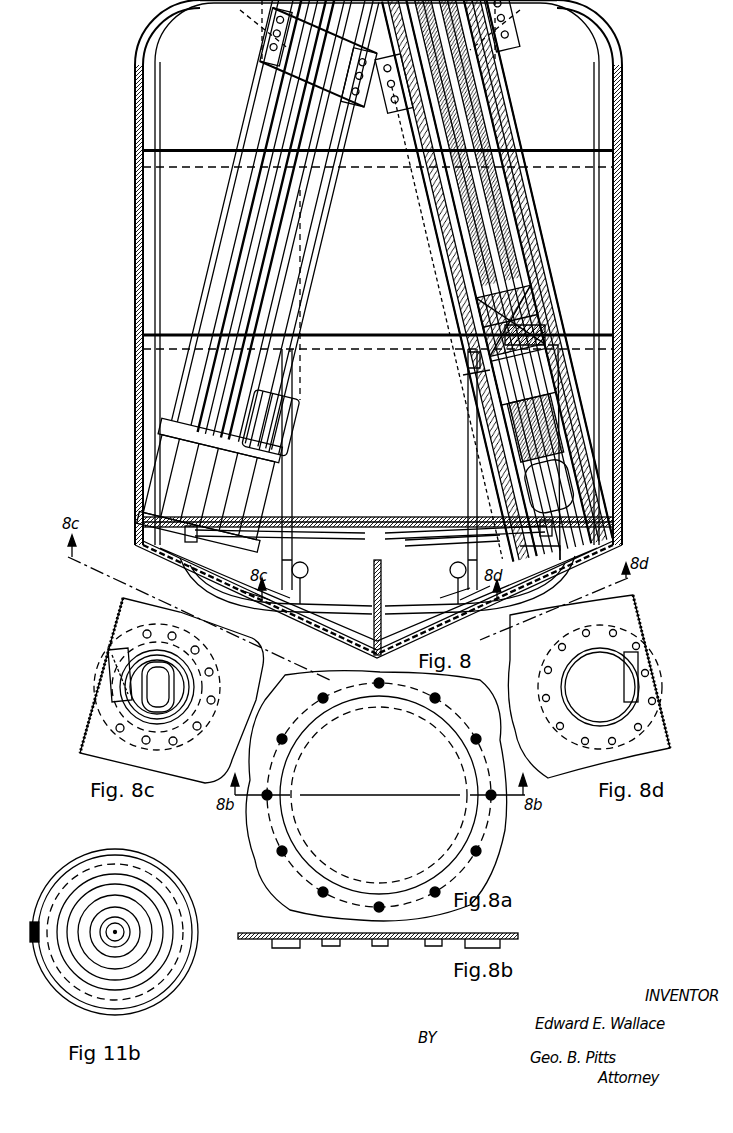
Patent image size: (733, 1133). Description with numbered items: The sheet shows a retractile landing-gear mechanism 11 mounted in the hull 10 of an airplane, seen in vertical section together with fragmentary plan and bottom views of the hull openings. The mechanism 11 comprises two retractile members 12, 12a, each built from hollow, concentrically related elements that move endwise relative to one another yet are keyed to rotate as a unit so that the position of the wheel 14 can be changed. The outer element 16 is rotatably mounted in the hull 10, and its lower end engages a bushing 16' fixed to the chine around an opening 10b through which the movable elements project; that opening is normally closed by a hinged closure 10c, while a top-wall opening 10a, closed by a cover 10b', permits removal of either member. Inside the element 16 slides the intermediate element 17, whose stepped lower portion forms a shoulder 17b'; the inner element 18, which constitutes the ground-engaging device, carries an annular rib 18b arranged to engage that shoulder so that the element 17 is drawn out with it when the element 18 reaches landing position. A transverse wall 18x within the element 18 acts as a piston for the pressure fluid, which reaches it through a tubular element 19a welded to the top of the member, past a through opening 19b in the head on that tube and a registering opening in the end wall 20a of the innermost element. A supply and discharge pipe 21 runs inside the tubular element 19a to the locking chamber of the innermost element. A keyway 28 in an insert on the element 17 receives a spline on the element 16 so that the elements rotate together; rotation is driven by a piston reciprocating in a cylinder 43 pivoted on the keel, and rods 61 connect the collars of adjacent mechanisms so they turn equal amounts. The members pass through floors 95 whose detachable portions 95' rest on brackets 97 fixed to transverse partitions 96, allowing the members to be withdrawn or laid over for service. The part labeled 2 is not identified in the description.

In FIG. 8, the frame 2 is at (620, 214).
In FIG. 8, the floors 95 is at (378, 321).
In FIG. 8, the detachable floor portions 95' is at (378, 235).
In FIG. 8, the transverse partitions 96 is at (208, 166).
In FIG. 8, the blocks or brackets 97 is at (318, 191).
In FIG. 8, the outer element 16 is at (286, 277).
In FIG. 11B, the outer element 16 is at (115, 921).
In FIG. 8, the bushing 16' is at (554, 567).
In FIG. 8, the annular rib 18b is at (528, 281).
In FIG. 8, the transverse wall 18x is at (546, 341).
In FIG. 8, the through opening 19b is at (458, 371).
In FIG. 8, the end wall 20a is at (462, 367).
In FIG. 8, the shoulder 17b' is at (577, 452).
In FIG. 8, the retractile member 12 is at (321, 309).
In FIG. 8, the retractile member 12a is at (447, 306).
In FIG. 8, the retractile mechanism 11 is at (396, 495).
In FIG. 8, the rods 61 is at (322, 530).
In FIG. 8, the cylinder 43 is at (440, 532).
In FIG. 8C, the wheel 14 is at (170, 673).
In FIG. 8C, the hull 10 is at (255, 663).
In FIG. 8A, the hull 10 is at (268, 879).
In FIG. 8D, the hull 10 is at (586, 769).
In FIG. 8A, the opening 10a is at (292, 823).
In FIG. 8B, the opening 10a is at (283, 923).
In FIG. 8B, the opening 10b is at (330, 958).
In FIG. 8A, the cover 10b' is at (405, 795).
In FIG. 8B, the hinged closure 10c is at (432, 941).
In FIG. 8D, the hinged closure 10c is at (590, 711).
In FIG. 11B, the intermediate element 17 is at (140, 863).
In FIG. 11B, the ground engaging element 18 is at (150, 901).
In FIG. 11B, the tubular element 19a is at (118, 916).
In FIG. 11B, the supply and discharge pipe 21 is at (128, 939).
In FIG. 11B, the keyway 28 is at (38, 946).